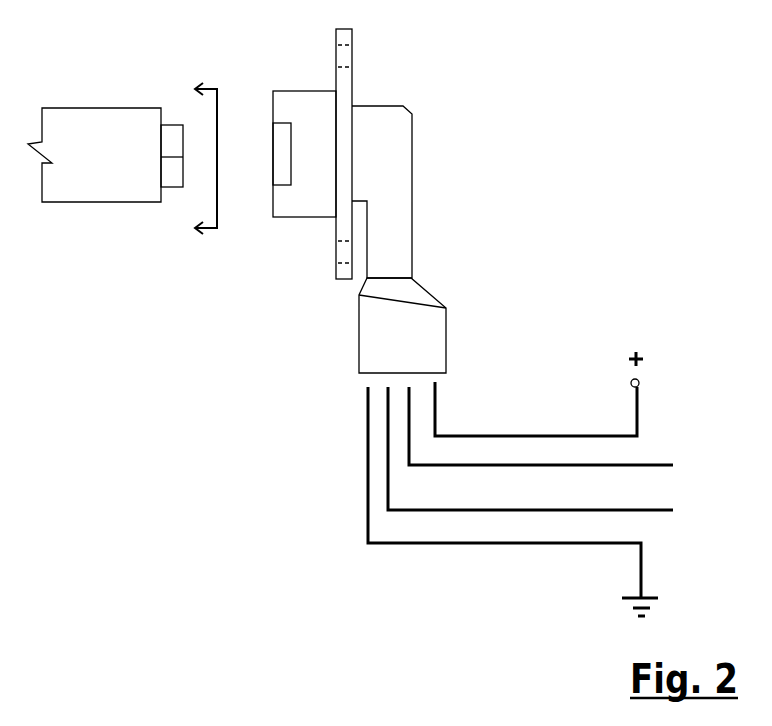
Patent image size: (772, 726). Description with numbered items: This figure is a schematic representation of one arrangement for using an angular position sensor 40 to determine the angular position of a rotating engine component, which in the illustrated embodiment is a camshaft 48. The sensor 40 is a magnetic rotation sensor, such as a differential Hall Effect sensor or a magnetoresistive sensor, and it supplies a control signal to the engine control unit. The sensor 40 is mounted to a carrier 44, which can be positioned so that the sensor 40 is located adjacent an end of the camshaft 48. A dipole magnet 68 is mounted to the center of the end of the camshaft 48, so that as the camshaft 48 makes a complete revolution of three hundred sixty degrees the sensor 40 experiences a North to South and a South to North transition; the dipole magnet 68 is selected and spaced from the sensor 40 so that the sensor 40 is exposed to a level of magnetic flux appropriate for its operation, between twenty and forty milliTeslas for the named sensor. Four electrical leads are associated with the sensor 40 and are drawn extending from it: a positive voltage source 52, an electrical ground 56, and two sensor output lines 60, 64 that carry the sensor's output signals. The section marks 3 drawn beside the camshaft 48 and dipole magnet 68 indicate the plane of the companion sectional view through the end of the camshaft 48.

The angular position sensor 40 is at (278, 182).
The carrier 44 is at (392, 168).
The camshaft 48 is at (89, 137).
The positive voltage source 52 is at (558, 394).
The electrical ground 56 is at (533, 509).
The sensor output line 60 is at (564, 434).
The sensor output line 64 is at (553, 456).
The dipole magnet 68 is at (173, 175).
The section line 3- 3 is at (194, 159).